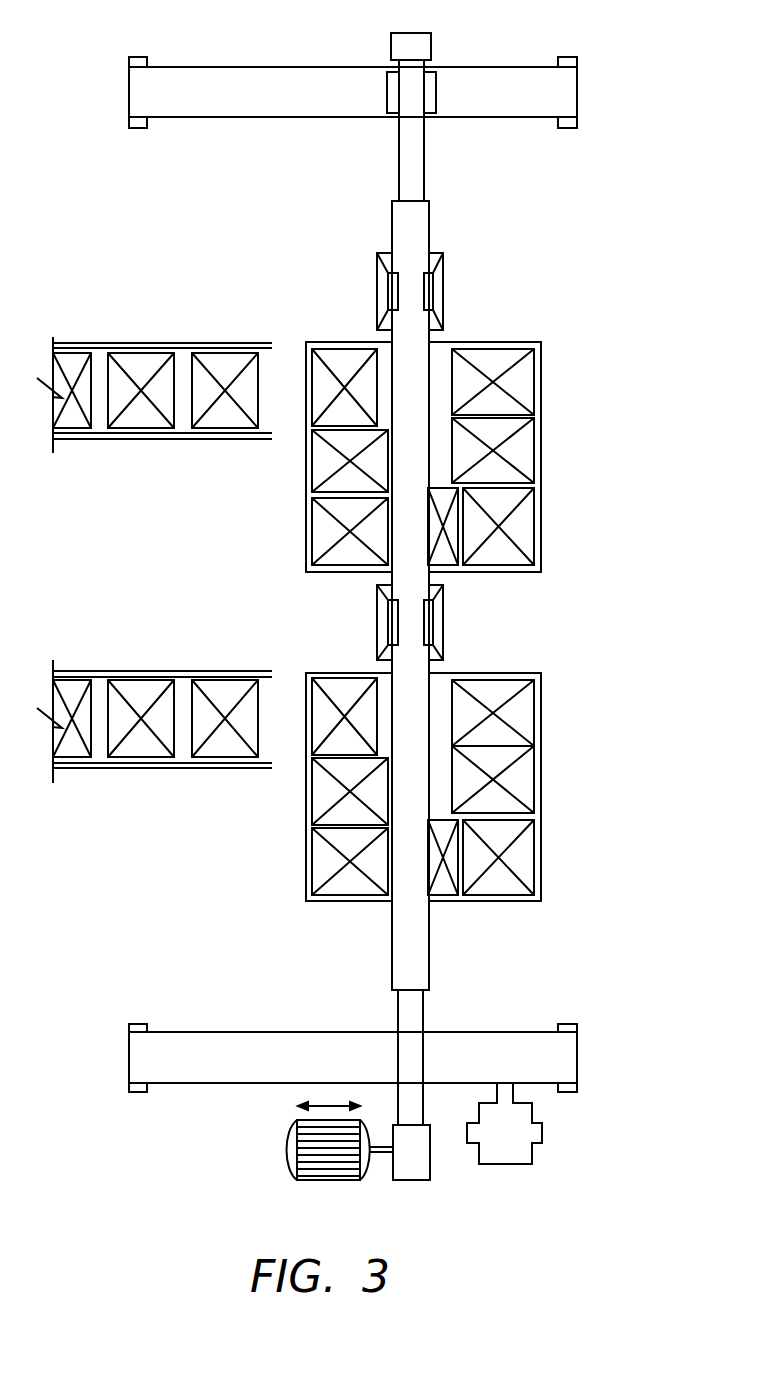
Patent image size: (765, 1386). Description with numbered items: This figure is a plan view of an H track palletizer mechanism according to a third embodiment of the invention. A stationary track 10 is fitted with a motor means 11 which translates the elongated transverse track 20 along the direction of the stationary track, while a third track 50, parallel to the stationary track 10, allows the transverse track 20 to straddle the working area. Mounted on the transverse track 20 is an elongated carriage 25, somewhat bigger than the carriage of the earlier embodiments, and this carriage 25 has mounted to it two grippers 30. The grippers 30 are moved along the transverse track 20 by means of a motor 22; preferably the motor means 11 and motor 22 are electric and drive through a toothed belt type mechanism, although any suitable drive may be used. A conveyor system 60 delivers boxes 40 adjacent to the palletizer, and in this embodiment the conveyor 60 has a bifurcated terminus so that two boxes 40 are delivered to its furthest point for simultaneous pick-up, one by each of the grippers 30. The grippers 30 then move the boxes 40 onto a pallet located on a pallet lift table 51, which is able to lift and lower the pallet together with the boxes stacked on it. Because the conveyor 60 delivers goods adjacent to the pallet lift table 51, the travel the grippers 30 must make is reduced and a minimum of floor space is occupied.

The stationary track 10 is at (208, 1045).
The motor means 11 is at (517, 1133).
The transverse track 20 is at (405, 1010).
The motor 22 is at (310, 1150).
The carriage 25 is at (415, 217).
The gripper 30 is at (442, 284).
The box 40 is at (327, 535).
The third track 50 is at (243, 77).
The pallet lift table 51 is at (541, 433).
The conveyor 60 is at (128, 442).